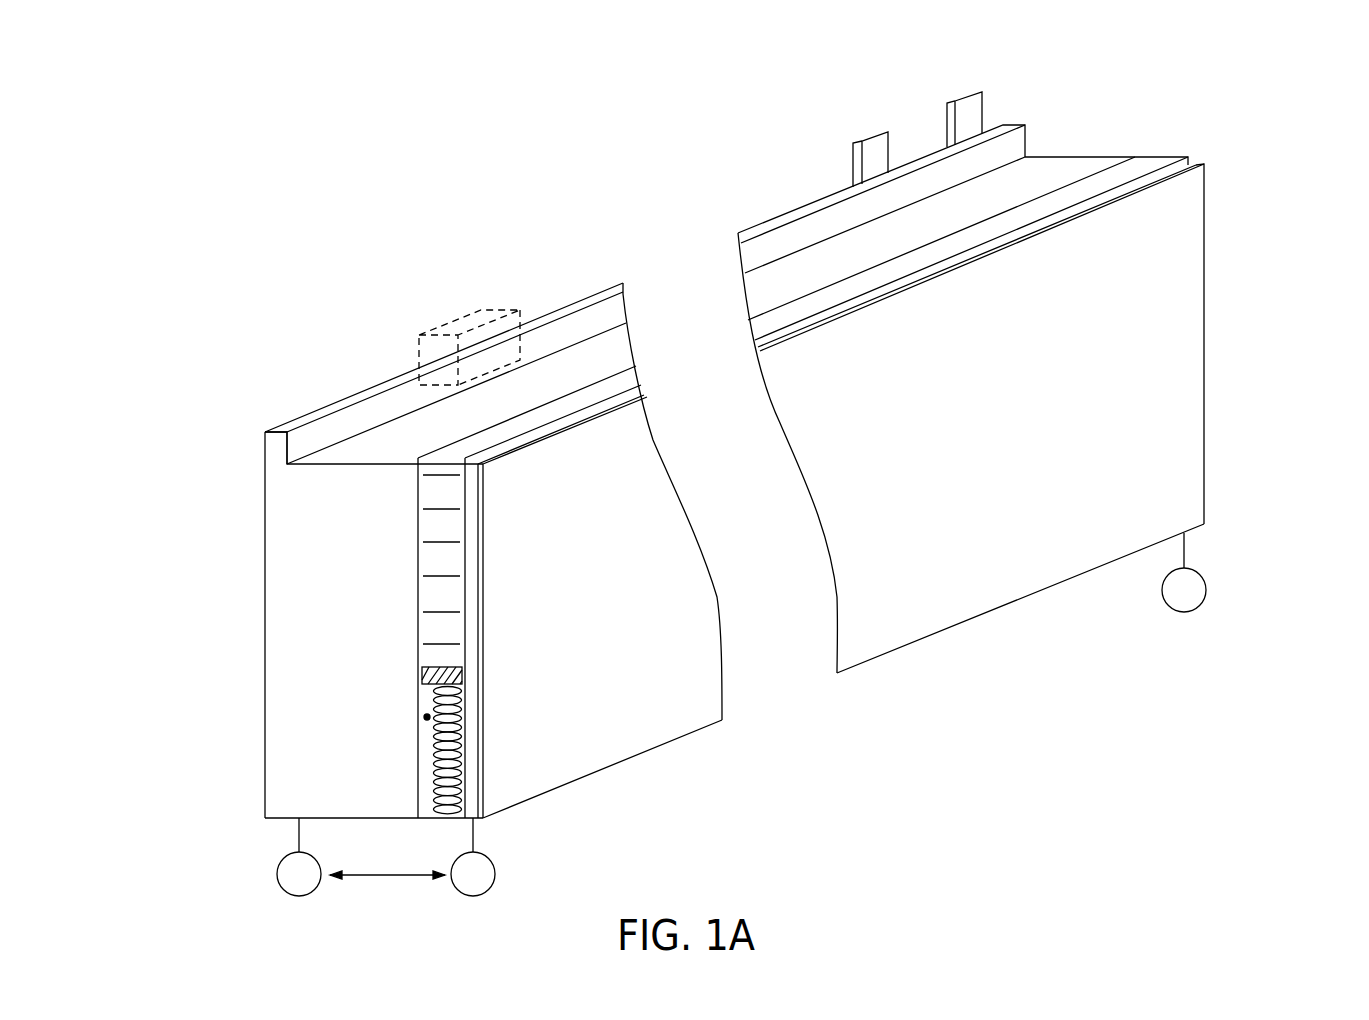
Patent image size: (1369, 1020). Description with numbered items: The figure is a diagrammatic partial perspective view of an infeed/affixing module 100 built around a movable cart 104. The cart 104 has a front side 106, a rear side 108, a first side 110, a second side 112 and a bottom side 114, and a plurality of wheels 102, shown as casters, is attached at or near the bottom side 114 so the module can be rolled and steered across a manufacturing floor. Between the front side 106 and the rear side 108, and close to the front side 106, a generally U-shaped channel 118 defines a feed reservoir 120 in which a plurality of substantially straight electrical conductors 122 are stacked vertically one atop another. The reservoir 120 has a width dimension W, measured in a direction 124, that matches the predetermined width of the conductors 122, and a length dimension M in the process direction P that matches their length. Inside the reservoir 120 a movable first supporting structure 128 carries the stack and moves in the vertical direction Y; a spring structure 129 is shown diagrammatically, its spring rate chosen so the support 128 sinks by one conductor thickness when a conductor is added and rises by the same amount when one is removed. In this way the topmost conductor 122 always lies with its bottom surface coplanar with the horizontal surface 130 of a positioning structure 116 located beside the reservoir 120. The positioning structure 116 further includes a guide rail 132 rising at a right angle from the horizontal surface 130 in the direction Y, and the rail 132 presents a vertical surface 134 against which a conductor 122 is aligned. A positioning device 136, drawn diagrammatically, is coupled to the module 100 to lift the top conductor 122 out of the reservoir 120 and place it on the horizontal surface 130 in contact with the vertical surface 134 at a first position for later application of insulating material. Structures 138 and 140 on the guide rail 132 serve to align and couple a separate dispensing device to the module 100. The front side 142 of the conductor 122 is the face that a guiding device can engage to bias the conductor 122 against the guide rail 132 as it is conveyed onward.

The infeed/affixing module 100 is at (147, 168).
The wheels 102 is at (297, 897).
The movable cart 104 is at (236, 806).
The front side 106 is at (550, 772).
The rear side 108 is at (265, 553).
The first side 110 is at (282, 673).
The second side 112 is at (1093, 156).
The bottom side 114 is at (535, 800).
The positioning structure 116 is at (314, 357).
The U-shaped channel 118 is at (427, 717).
The feed reservoir 120 is at (443, 622).
The electrical conductors 122 is at (598, 383).
The direction 124 is at (383, 877).
The first supporting structure 128 is at (422, 674).
The spring structure 129 is at (460, 706).
The horizontal surface 130 is at (373, 445).
The guide rail 132 is at (277, 453).
The vertical surface 134 is at (407, 397).
The positioning device 136 is at (460, 322).
The structure 138 is at (865, 142).
The structure 140 is at (953, 100).
The front side 142 is at (558, 422).